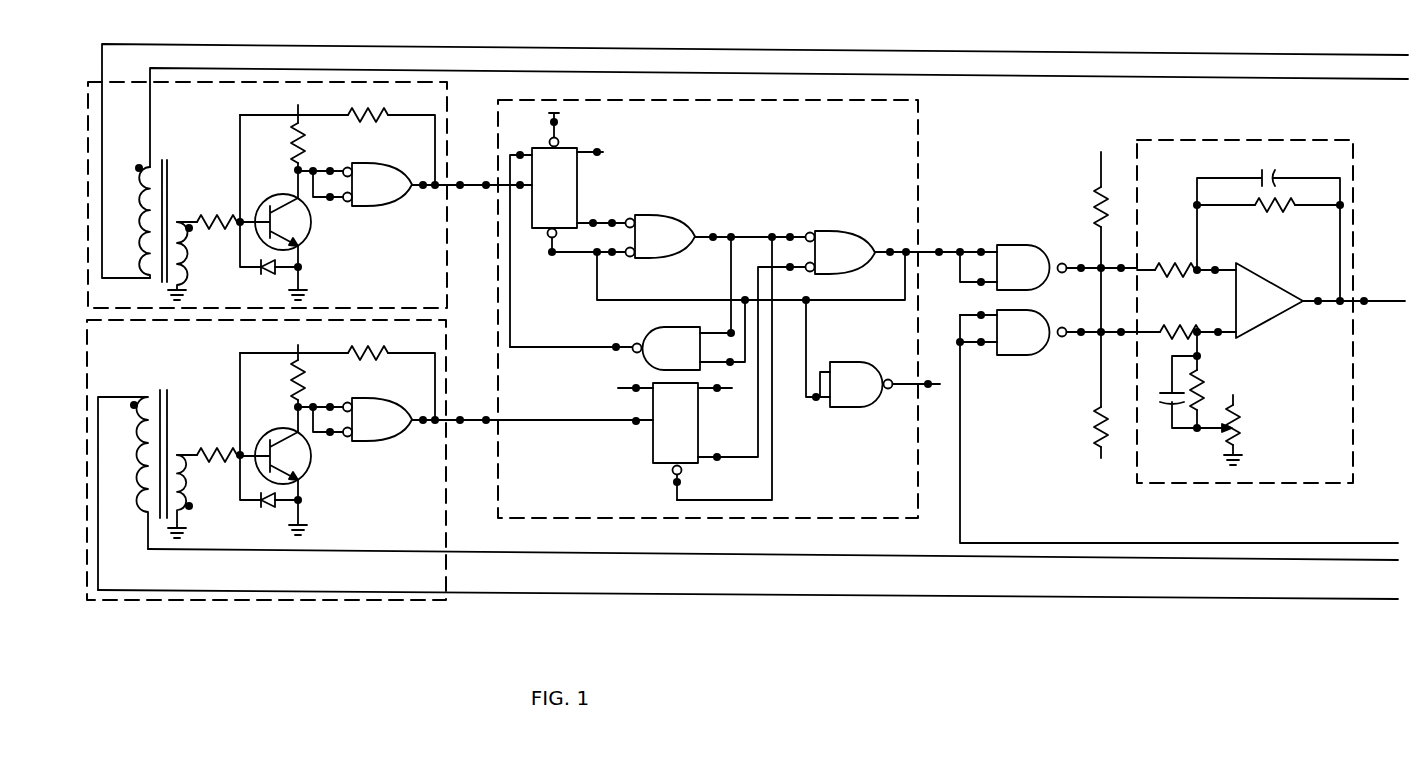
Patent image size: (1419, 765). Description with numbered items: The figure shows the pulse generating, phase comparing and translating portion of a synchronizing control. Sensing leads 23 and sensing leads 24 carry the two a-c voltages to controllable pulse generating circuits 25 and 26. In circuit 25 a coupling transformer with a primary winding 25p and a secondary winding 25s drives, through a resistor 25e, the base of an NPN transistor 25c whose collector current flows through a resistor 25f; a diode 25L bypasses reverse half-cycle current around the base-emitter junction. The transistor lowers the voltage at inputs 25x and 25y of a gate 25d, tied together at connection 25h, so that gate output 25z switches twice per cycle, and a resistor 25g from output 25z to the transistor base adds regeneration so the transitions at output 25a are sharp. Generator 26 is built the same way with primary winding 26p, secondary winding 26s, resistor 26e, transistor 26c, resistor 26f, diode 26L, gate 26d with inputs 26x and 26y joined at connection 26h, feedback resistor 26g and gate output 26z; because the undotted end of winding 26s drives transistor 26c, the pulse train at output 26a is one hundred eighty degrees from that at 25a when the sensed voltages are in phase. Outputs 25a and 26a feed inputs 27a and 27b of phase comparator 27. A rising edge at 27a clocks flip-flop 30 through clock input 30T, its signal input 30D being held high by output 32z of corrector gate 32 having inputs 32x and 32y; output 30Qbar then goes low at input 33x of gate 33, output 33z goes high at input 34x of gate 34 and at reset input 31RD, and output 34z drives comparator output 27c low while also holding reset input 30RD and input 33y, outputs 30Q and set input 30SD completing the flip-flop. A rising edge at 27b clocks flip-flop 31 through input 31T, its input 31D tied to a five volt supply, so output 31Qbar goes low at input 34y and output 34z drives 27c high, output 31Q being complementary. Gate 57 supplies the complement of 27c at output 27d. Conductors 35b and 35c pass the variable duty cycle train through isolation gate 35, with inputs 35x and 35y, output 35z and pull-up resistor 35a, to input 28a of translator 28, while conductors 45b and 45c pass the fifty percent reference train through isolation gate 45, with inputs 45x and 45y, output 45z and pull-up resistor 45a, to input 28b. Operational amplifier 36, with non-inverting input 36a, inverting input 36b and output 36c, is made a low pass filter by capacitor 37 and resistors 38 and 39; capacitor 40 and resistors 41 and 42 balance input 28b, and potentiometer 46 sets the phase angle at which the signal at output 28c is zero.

The sensing leads 23 is at (708, 50).
The sensing leads 24 is at (735, 556).
The controllable pulse generating circuit 25 is at (428, 97).
The primary winding 25p is at (146, 236).
The secondary winding 25s is at (189, 248).
The resistor 25e is at (216, 216).
The resistor 25f is at (295, 132).
The resistor 25g is at (352, 112).
The gate input junction 25h is at (312, 168).
The gate input 25x is at (339, 168).
The gate input 25y is at (338, 203).
The gate output 25z is at (422, 180).
The gate 25d is at (382, 184).
The NPN transistor 25c is at (311, 232).
The diode 25L is at (262, 276).
The pulse generator output 25a is at (460, 180).
The comparator input 27a is at (486, 190).
The controllable pulse generator 26 is at (420, 512).
The primary winding 26p is at (146, 448).
The secondary winding 26s is at (189, 477).
The resistor 26e is at (216, 450).
The resistor 26f is at (295, 386).
The resistor 26g is at (352, 350).
The gate input junction 26h is at (312, 404).
The gate input 26x is at (339, 403).
The gate input 26y is at (338, 436).
The gate output 26z is at (414, 424).
The gate 26d is at (382, 419).
The transistor 26c is at (311, 480).
The diode 26L is at (262, 514).
The pulse generator output 26a is at (460, 416).
The comparator input 27b is at (486, 426).
The phase comparator circuit 27 is at (918, 128).
The comparator output 27c is at (938, 250).
The complementary comparator output 27d is at (940, 386).
The D type flip-flop 30 is at (554, 188).
The signal input 30D is at (508, 154).
The unclocked set input 30SD is at (557, 126).
The first output 30Q is at (604, 152).
The second output 30Qbar is at (595, 210).
The clock input 30T is at (518, 272).
The unclocked reset input 30RD is at (570, 256).
The gate 33 is at (665, 236).
The gate input 33x is at (626, 222).
The gate input 33y is at (622, 258).
The gate output 33z is at (714, 234).
The gate 34 is at (845, 252).
The gate input 34x is at (800, 232).
The gate input 34y is at (799, 272).
The gate output 34z is at (883, 250).
The gate 32 is at (672, 348).
The gate first input 32x is at (726, 330).
The gate second input 32y is at (720, 362).
The gate output 32z is at (610, 346).
The flip-flop 31 is at (675, 423).
The signal input 31D is at (634, 386).
The clock input 31T is at (630, 424).
The first output 31Q is at (724, 390).
The second output 31Qbar is at (721, 460).
The unclocked reset input 31RD is at (672, 482).
The gate 57 is at (873, 353).
The isolation gate 35 is at (1023, 267).
The resistor 35a is at (1096, 188).
The conductor 35b is at (966, 252).
The gate input 35x is at (984, 252).
The gate input 35y is at (981, 284).
The gate output 35z is at (1080, 260).
The conductor 35c is at (1102, 269).
The isolation gate 45 is at (1023, 332).
The resistor 45a is at (1095, 422).
The conductor 45b is at (960, 466).
The gate input 45x is at (967, 310).
The gate input 45y is at (986, 350).
The gate output 45z is at (1082, 338).
The conductor 45c is at (1101, 330).
The translator 28 is at (1313, 158).
The translator input 28a is at (1118, 280).
The translator input 28b is at (1110, 318).
The translator output 28c is at (1366, 302).
The operational amplifier 36 is at (1269, 300).
The non-inverting input 36a is at (1220, 268).
The inverting input 36b is at (1222, 330).
The amplifier output 36c is at (1318, 298).
The capacitor 37 is at (1262, 170).
The resistor 38 is at (1292, 206).
The resistor 39 is at (1178, 264).
The capacitor 40 is at (1168, 396).
The resistor 41 is at (1200, 382).
The resistor 42 is at (1174, 340).
The potentiometer 46 is at (1240, 426).